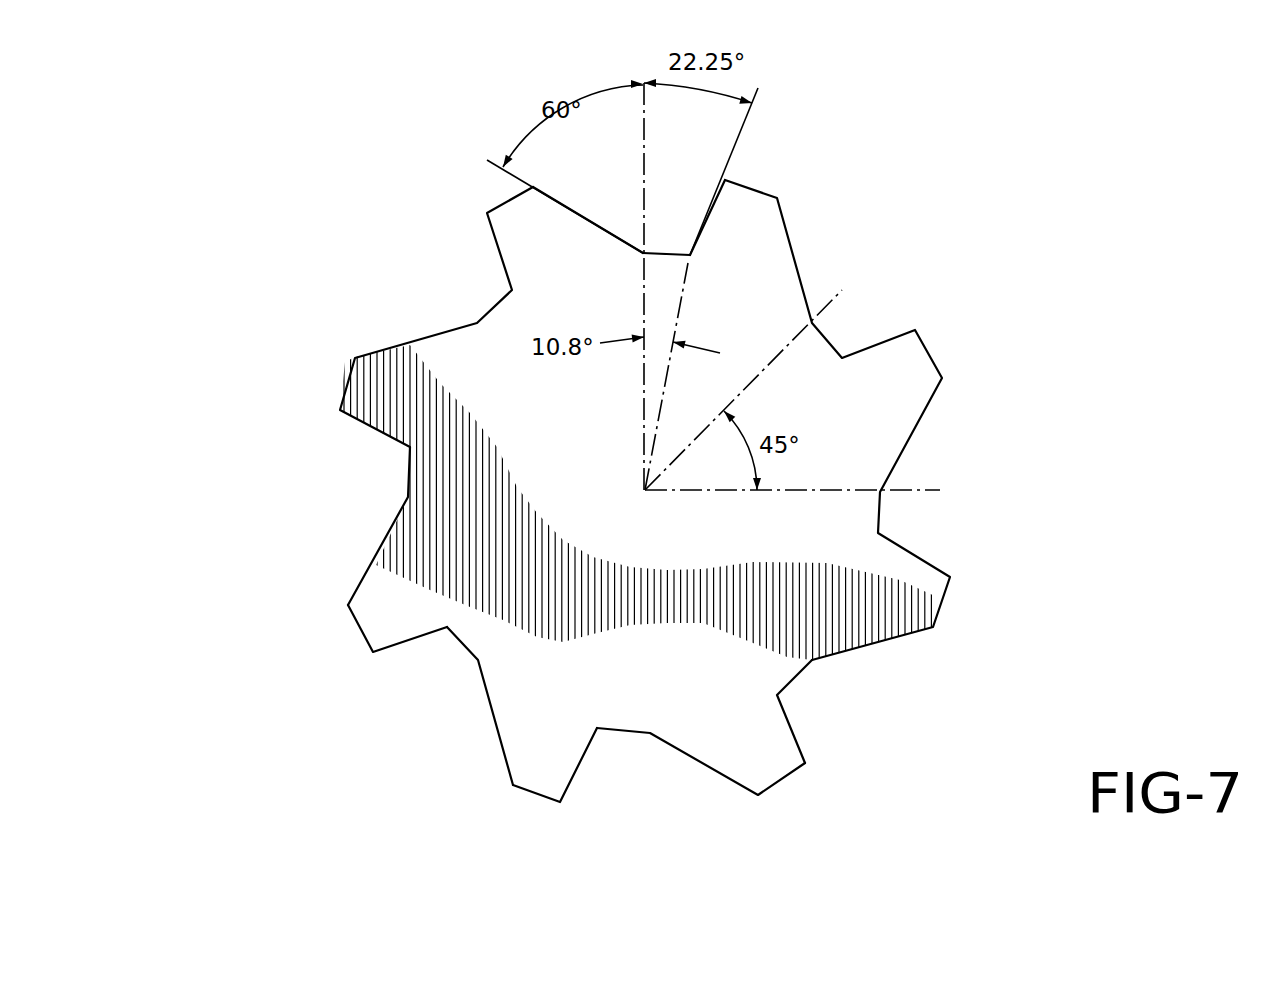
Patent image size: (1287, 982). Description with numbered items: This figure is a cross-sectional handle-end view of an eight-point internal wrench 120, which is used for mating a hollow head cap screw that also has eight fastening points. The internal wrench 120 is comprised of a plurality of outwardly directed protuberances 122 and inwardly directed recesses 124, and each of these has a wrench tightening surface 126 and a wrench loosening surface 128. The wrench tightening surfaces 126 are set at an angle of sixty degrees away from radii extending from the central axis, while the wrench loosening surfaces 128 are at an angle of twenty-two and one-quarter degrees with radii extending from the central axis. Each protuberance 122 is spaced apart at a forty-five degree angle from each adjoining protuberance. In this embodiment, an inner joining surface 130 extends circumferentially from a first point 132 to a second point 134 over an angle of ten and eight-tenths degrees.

The internal wrench 120 is at (305, 210).
The outwardly directed protuberance 122 is at (378, 622).
The inwardly directed recess 124 is at (812, 685).
The wrench tightening surface 126 is at (493, 720).
The wrench loosening surface 128 is at (588, 765).
The inner joining surface 130 is at (662, 260).
The point 132 is at (640, 252).
The point 134 is at (692, 257).